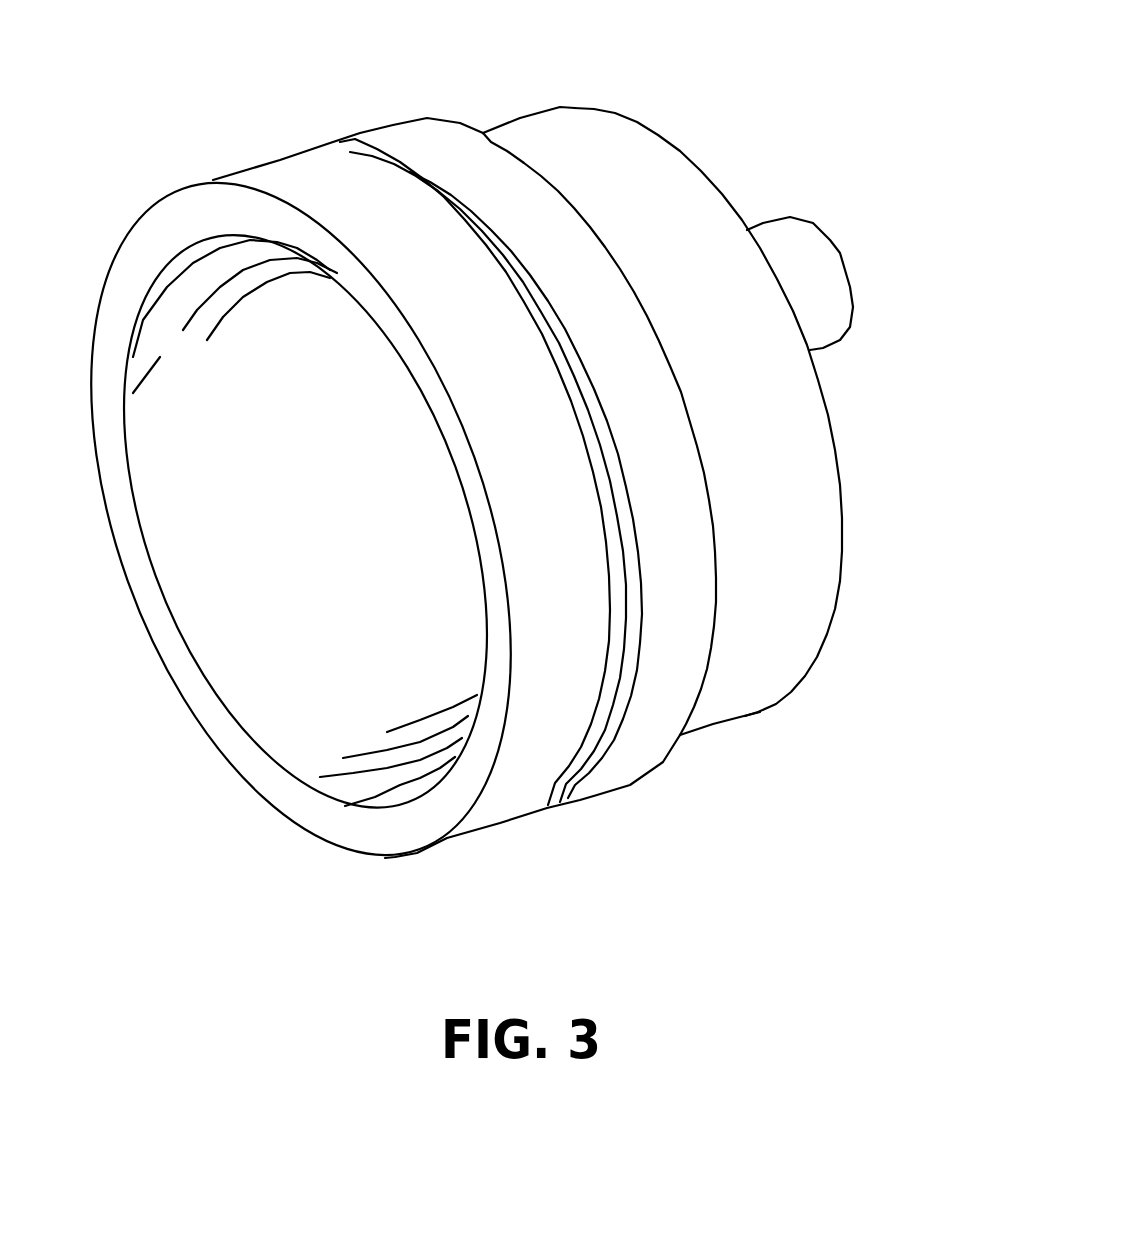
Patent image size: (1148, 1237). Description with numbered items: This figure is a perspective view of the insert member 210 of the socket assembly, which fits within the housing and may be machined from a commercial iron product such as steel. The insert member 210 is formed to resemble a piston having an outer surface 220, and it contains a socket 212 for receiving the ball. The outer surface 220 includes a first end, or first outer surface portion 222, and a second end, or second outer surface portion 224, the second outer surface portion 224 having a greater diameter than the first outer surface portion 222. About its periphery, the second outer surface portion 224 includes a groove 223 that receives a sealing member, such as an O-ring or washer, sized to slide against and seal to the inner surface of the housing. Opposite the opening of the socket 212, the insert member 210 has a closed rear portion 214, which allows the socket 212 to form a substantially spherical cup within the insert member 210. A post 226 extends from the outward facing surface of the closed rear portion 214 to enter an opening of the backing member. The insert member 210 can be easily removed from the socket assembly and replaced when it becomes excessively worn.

The insert member 210 is at (281, 112).
The socket 212 is at (220, 603).
The closed rear portion 214 is at (844, 532).
The outer surface 220 is at (865, 803).
The first outer surface portion 222 is at (740, 717).
The groove 223 is at (620, 517).
The second outer surface portion 224 is at (500, 827).
The post 226 is at (843, 253).